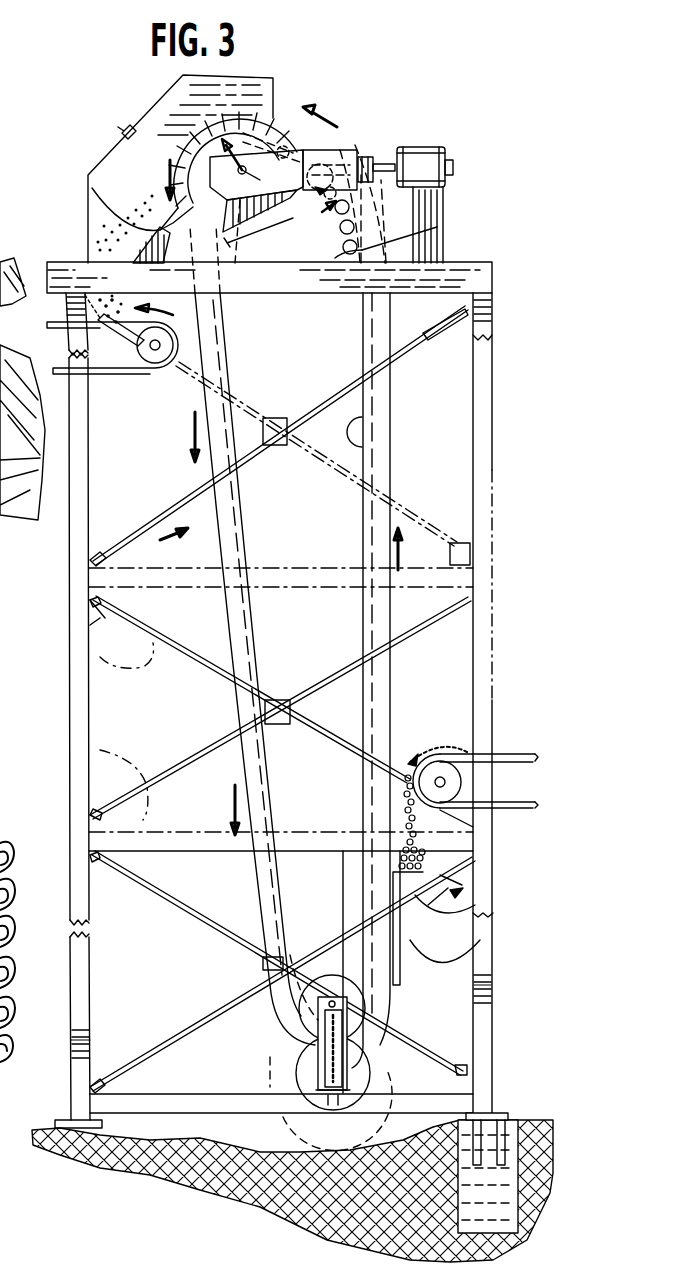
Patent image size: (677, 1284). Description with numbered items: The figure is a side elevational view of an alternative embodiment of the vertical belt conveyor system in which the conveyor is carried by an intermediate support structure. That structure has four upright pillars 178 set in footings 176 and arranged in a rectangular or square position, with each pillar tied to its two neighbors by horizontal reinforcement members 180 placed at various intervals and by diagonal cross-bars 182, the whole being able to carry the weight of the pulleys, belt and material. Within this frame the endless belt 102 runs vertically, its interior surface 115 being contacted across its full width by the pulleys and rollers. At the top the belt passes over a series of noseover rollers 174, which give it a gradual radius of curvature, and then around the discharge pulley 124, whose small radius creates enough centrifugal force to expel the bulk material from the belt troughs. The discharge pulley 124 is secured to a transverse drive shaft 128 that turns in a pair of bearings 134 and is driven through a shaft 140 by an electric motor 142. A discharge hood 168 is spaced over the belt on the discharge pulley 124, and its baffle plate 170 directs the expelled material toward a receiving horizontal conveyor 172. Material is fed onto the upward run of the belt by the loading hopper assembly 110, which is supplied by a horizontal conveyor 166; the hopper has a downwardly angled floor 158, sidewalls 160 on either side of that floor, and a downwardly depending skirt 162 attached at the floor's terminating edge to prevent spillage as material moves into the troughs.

The endless belt 102 is at (100, 580).
The loading hopper assembly 110 is at (480, 895).
The interior surface 115 is at (363, 438).
The discharge pulley 124 is at (92, 188).
The drive shaft 128 is at (244, 168).
The bearings 134 is at (378, 160).
The shaft 140 is at (388, 150).
The electric motor 142 is at (420, 155).
The downwardly angled floor 158 is at (480, 897).
The sidewalls 160 is at (493, 920).
The skirt 162 is at (400, 960).
The horizontal conveyor 166 is at (513, 753).
The discharge hood 168 is at (250, 76).
The baffle plate 170 is at (157, 103).
The horizontal conveyor 172 is at (147, 380).
The noseover rollers 174 is at (437, 227).
The footings 176 is at (507, 1117).
The upright pillars 178 is at (70, 1065).
The horizontal reinforcement members 180 is at (90, 750).
The cross-bars 182 is at (100, 658).